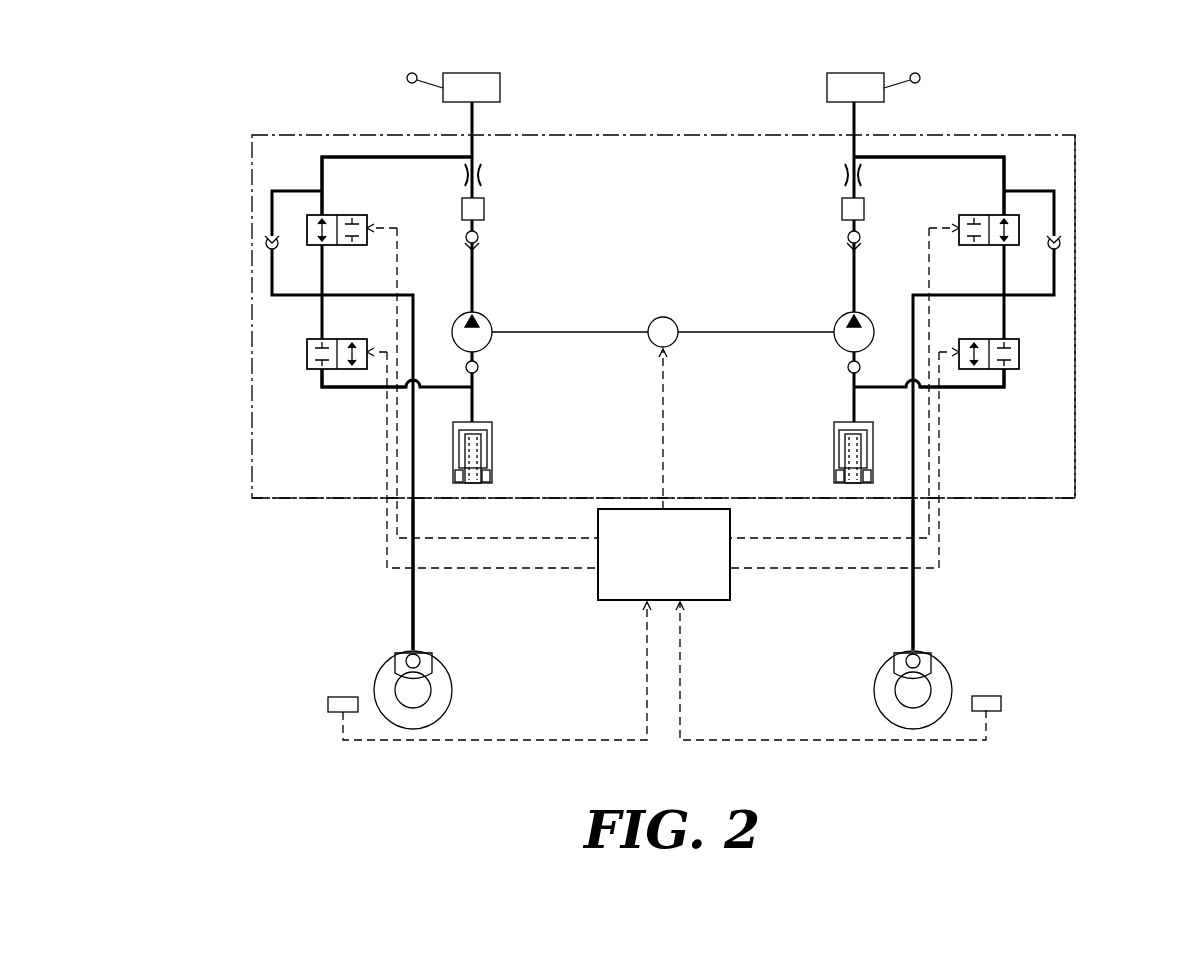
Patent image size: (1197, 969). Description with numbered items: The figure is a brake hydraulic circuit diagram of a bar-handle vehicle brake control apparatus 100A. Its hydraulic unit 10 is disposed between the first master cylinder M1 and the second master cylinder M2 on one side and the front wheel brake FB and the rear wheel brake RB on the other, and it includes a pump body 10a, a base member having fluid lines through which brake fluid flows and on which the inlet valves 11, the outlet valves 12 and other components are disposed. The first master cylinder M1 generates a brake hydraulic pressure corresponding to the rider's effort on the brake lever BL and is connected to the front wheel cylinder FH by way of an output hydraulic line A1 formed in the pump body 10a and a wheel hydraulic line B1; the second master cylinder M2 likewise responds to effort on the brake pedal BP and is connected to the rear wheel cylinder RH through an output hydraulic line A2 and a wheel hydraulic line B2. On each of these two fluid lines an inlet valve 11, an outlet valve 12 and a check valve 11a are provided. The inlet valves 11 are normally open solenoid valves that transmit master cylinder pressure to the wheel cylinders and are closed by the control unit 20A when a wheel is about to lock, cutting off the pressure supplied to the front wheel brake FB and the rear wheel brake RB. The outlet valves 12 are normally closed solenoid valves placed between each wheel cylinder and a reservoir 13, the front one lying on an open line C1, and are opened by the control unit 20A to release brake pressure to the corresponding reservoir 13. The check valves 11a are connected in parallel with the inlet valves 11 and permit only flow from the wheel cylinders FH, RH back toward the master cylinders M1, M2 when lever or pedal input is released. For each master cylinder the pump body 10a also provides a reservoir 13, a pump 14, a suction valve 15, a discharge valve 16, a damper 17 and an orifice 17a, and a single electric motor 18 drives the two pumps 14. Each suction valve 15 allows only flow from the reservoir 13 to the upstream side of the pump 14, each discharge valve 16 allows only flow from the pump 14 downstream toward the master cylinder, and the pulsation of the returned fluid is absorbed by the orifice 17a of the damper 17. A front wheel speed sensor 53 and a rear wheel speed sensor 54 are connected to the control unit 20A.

The hydraulic unit 10 is at (1096, 160).
The pump body 10a is at (1076, 200).
The inlet valve 11 is at (358, 215).
The check valve 11a is at (266, 242).
The outlet valve 12 is at (342, 339).
The reservoir 13 is at (478, 422).
The pump 14 is at (486, 320).
The suction valve 15 is at (480, 365).
The discharge valve 16 is at (480, 240).
The damper 17 is at (484, 212).
The orifice 17a is at (482, 174).
The electric motor 18 is at (663, 317).
The control unit 20A is at (716, 601).
The front wheel speed sensor 53 is at (1001, 703).
The rear wheel speed sensor 54 is at (328, 704).
The brake control apparatus 100A is at (1092, 366).
The first master cylinder M1 is at (855, 73).
The second master cylinder M2 is at (472, 73).
The brake lever BL is at (900, 72).
The brake pedal BP is at (428, 72).
The output hydraulic line A1 is at (946, 157).
The output hydraulic line A2 is at (378, 157).
The open line C1 is at (362, 389).
The wheel hydraulic line B1 is at (913, 598).
The wheel hydraulic line B2 is at (415, 598).
The front wheel cylinder FH is at (931, 658).
The rear wheel cylinder RH is at (395, 658).
The front wheel brake FB is at (950, 728).
The rear wheel brake RB is at (377, 728).